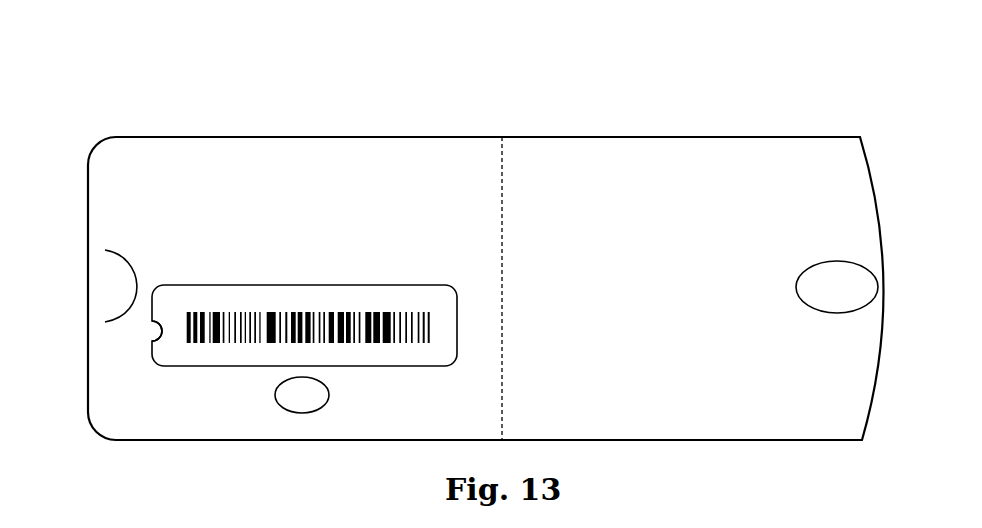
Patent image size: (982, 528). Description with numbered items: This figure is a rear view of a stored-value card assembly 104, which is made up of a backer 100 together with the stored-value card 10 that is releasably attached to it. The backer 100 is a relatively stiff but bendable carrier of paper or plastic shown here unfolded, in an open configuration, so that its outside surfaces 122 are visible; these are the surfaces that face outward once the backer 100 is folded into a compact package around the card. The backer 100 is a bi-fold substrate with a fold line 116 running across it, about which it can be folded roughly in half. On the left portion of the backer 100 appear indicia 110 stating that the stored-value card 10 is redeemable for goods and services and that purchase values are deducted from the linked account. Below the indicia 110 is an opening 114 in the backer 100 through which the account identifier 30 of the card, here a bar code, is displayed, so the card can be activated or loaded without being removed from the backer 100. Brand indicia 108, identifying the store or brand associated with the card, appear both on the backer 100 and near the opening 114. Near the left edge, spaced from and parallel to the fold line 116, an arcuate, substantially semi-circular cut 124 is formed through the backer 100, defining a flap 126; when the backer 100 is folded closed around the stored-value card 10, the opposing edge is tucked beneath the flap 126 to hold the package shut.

The backer 100 is at (750, 118).
The stored-value card assembly 104 is at (818, 62).
The indicia 110 is at (357, 160).
The fold line 116 is at (502, 157).
The stored-value card 10 is at (172, 353).
The account identifier 30 is at (222, 344).
The opening 114 is at (153, 341).
The flap 126 is at (130, 282).
The cut 124 is at (112, 320).
The brand indicia 108 is at (875, 292).
The outside surfaces 122 is at (714, 420).